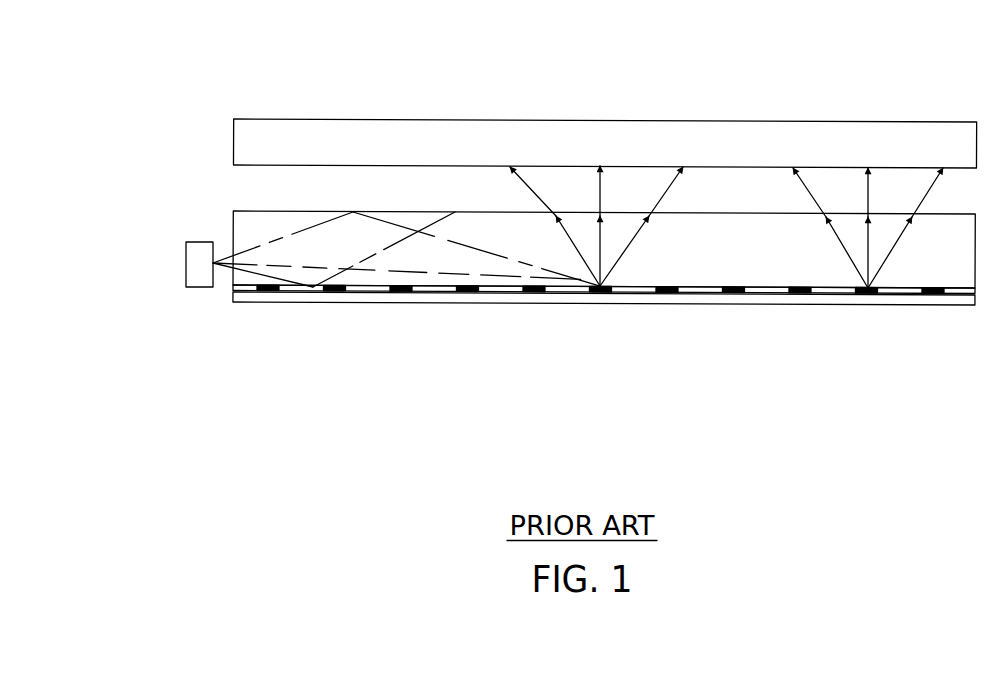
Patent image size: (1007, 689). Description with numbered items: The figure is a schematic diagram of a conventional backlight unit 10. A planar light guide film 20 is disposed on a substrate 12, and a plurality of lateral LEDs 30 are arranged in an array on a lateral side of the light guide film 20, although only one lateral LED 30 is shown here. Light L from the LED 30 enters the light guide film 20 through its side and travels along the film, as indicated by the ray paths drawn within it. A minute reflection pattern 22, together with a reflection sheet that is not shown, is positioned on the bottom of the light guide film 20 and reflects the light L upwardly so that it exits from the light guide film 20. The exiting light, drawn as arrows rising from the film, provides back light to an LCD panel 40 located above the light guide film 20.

The backlight unit 10 is at (452, 22).
The substrate 12 is at (777, 304).
The light guide film 20 is at (907, 275).
The minute reflection pattern 22 is at (408, 292).
The lateral LED 30 is at (202, 287).
The LCD panel 40 is at (837, 147).
The light L is at (495, 255).